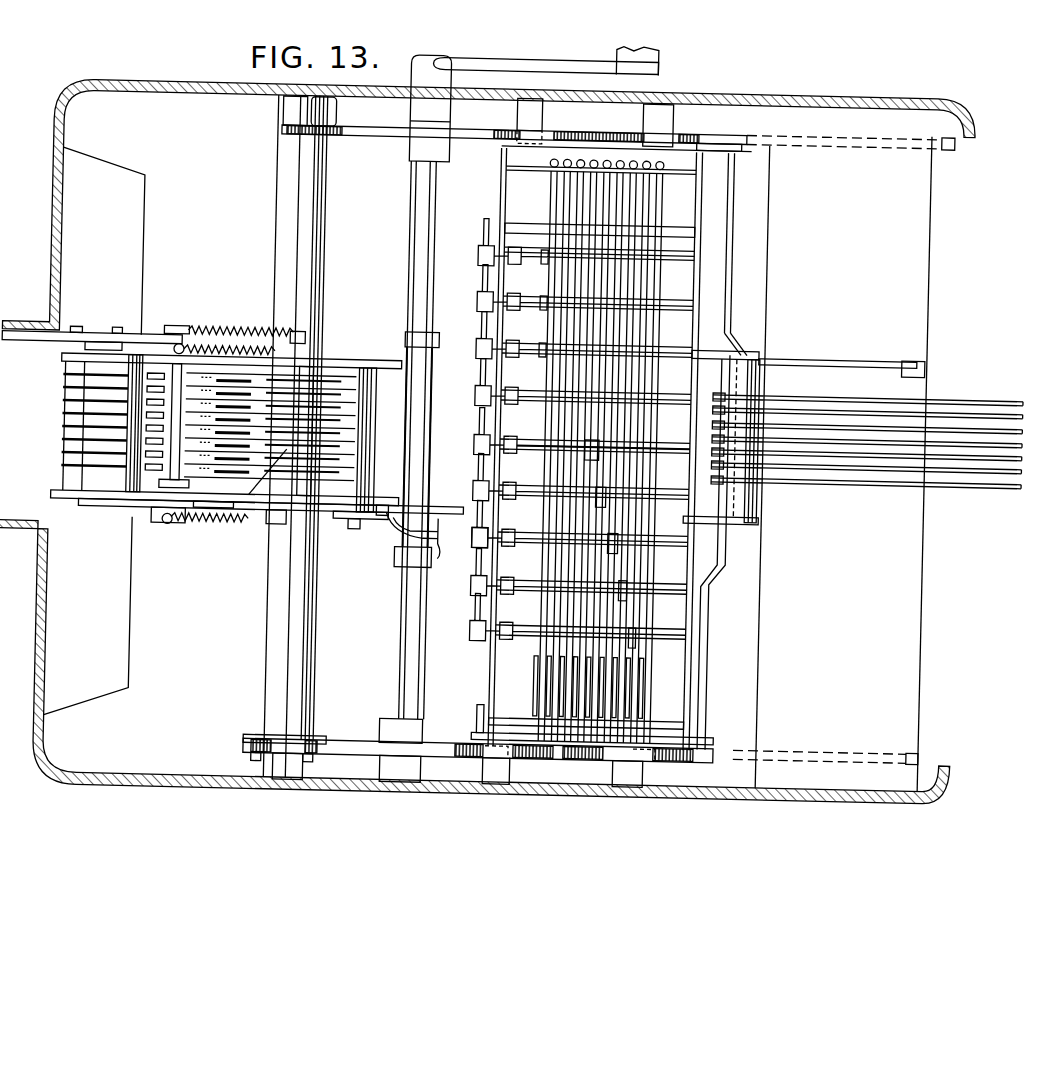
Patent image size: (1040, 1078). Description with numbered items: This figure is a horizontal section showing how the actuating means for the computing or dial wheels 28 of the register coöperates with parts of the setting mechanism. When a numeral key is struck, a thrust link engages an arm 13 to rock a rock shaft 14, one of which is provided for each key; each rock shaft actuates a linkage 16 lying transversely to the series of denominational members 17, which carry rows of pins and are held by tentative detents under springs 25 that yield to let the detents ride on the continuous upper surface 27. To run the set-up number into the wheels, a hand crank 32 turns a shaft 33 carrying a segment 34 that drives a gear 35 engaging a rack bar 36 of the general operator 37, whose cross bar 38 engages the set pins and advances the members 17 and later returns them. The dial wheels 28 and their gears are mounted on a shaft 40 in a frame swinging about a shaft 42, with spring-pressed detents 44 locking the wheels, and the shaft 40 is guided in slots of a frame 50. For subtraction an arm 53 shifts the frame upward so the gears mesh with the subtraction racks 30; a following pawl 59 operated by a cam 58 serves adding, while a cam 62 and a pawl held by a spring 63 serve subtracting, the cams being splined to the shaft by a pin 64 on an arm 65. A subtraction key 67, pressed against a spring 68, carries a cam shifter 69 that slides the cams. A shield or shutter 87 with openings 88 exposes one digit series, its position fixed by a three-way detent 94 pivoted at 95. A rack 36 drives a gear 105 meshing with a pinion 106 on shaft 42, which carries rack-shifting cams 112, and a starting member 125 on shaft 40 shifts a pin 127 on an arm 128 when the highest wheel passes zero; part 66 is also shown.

The arm 13 is at (480, 237).
The rock shaft 14 is at (670, 343).
The linkage 16 is at (634, 286).
The denominational member 17 is at (458, 462).
The spring 25 is at (733, 413).
The continuous upper surface 27 is at (818, 421).
The dial wheel 28 is at (205, 398).
The subtraction rack 30 is at (234, 418).
The hand crank 32 is at (576, 64).
The shaft 33 is at (406, 630).
The segment 34 is at (408, 137).
The gear 35 is at (500, 131).
The rack bar 36 is at (612, 130).
The general operator 37 is at (582, 130).
The cross bar 38 is at (757, 604).
The shaft 40 is at (200, 508).
The shaft 42 is at (292, 611).
The spring-pressed detent 44 is at (86, 431).
The frame 50 is at (136, 365).
The arm 53 is at (275, 531).
The cam 58 is at (415, 531).
The following pawl 59 is at (367, 536).
The cam 62 is at (386, 512).
The spring 63 is at (430, 377).
The pin 64 is at (443, 551).
The arm 65 is at (397, 558).
The link 66 is at (408, 535).
The subtraction key 67 is at (92, 345).
The spring 68 is at (270, 350).
The cam shifter 69 is at (401, 350).
The shield or shutter 87 is at (180, 360).
The opening 88 is at (141, 481).
The three-way detent 94 is at (250, 500).
The pivot 95 is at (306, 378).
The gear 105 is at (330, 140).
The pinion 106 is at (340, 126).
The rack-shifting cam 112 is at (356, 392).
The starting member 125 is at (158, 502).
The pin 127 is at (187, 509).
The arm 128 is at (217, 507).